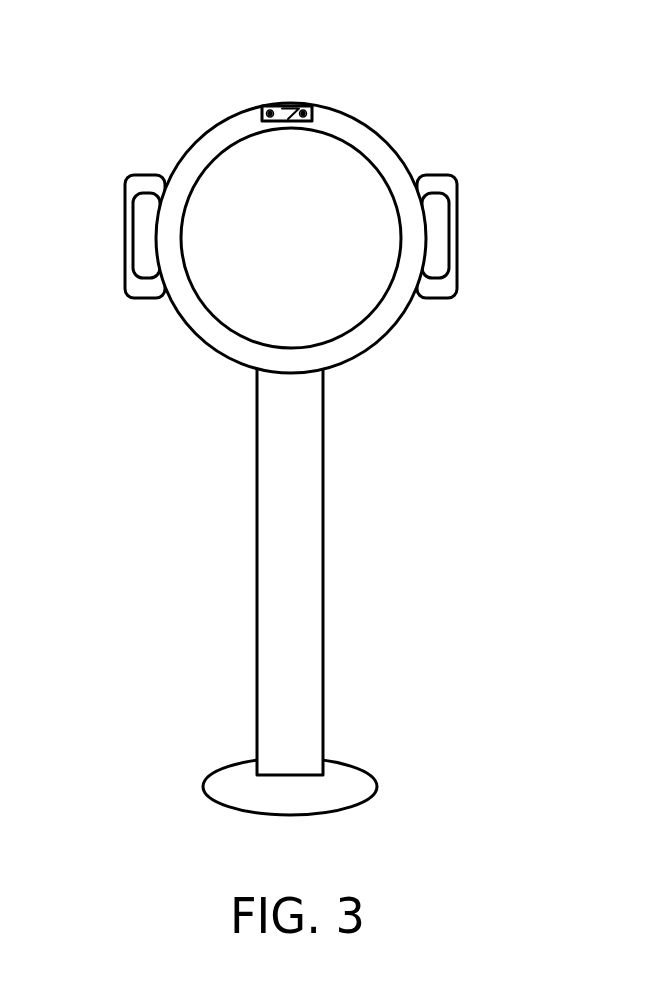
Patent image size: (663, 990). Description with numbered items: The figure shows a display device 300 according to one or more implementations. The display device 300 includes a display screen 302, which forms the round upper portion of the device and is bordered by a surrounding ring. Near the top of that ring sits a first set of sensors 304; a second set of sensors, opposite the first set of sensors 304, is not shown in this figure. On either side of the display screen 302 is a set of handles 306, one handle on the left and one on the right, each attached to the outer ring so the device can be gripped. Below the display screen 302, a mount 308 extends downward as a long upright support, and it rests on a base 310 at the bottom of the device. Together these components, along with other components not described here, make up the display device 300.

The display device 300 is at (455, 100).
The display screen 302 is at (253, 195).
The first set of sensors 304 is at (302, 103).
The set of handles 306 is at (130, 252).
The mount 308 is at (323, 543).
The base 310 is at (363, 777).